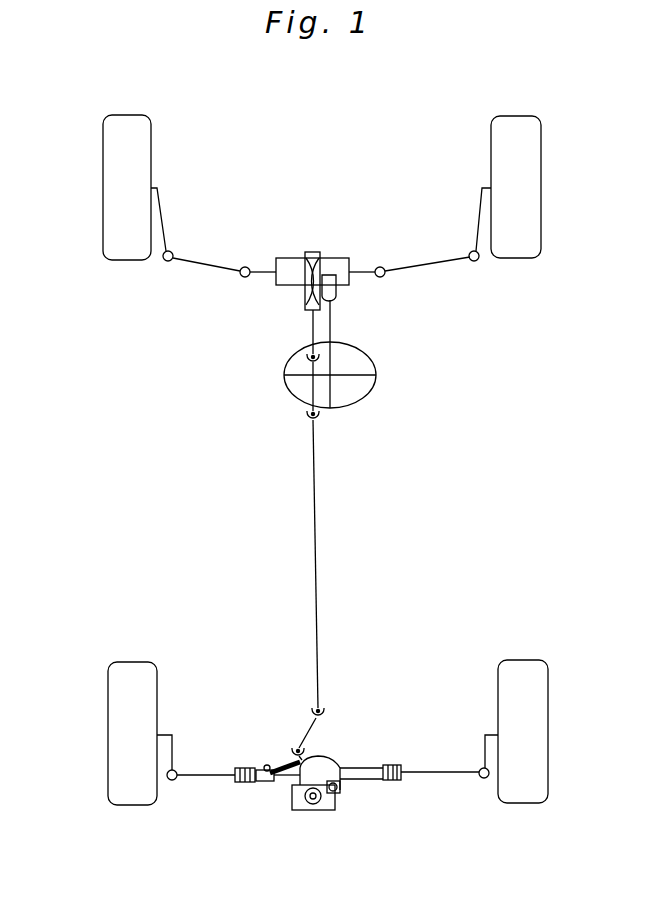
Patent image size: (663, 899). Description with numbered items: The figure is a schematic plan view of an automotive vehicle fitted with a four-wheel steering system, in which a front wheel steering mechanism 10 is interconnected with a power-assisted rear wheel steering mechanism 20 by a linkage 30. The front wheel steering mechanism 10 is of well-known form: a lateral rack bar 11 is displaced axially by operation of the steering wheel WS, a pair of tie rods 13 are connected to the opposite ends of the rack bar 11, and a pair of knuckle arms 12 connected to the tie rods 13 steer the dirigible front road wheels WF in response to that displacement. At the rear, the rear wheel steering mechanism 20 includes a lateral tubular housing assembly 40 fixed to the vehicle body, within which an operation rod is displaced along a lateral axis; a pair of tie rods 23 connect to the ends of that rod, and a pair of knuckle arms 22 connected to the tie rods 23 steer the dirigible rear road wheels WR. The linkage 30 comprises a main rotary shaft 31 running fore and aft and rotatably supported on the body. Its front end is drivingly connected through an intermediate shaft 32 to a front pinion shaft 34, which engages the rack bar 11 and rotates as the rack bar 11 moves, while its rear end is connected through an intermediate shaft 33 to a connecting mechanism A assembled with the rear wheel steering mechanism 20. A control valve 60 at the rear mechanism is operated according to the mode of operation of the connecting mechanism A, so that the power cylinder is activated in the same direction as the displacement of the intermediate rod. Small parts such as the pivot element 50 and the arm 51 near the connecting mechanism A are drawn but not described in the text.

The front road wheels WF is at (106, 133).
The rear road wheels WR is at (112, 664).
The steering wheel WS is at (372, 357).
The front wheel steering mechanism 10 is at (302, 263).
The rack bar 11 is at (265, 272).
The knuckle arms 12 is at (163, 210).
The tie rods 13 is at (204, 278).
The power-assisted rear wheel steering mechanism 20 is at (318, 785).
The knuckle arms 22 is at (172, 742).
The tie rods 23 is at (211, 778).
The linkage 30 is at (319, 590).
The main rotary shaft 31 is at (317, 580).
The intermediate shaft 32 is at (310, 388).
The intermediate shaft 33 is at (318, 720).
The front pinion shaft 34 is at (311, 323).
The tubular housing assembly 40 is at (336, 807).
The pivot shaft 50 is at (310, 803).
The swing arm 51 is at (299, 760).
The control valve 60 is at (262, 790).
The connecting mechanism A is at (280, 798).